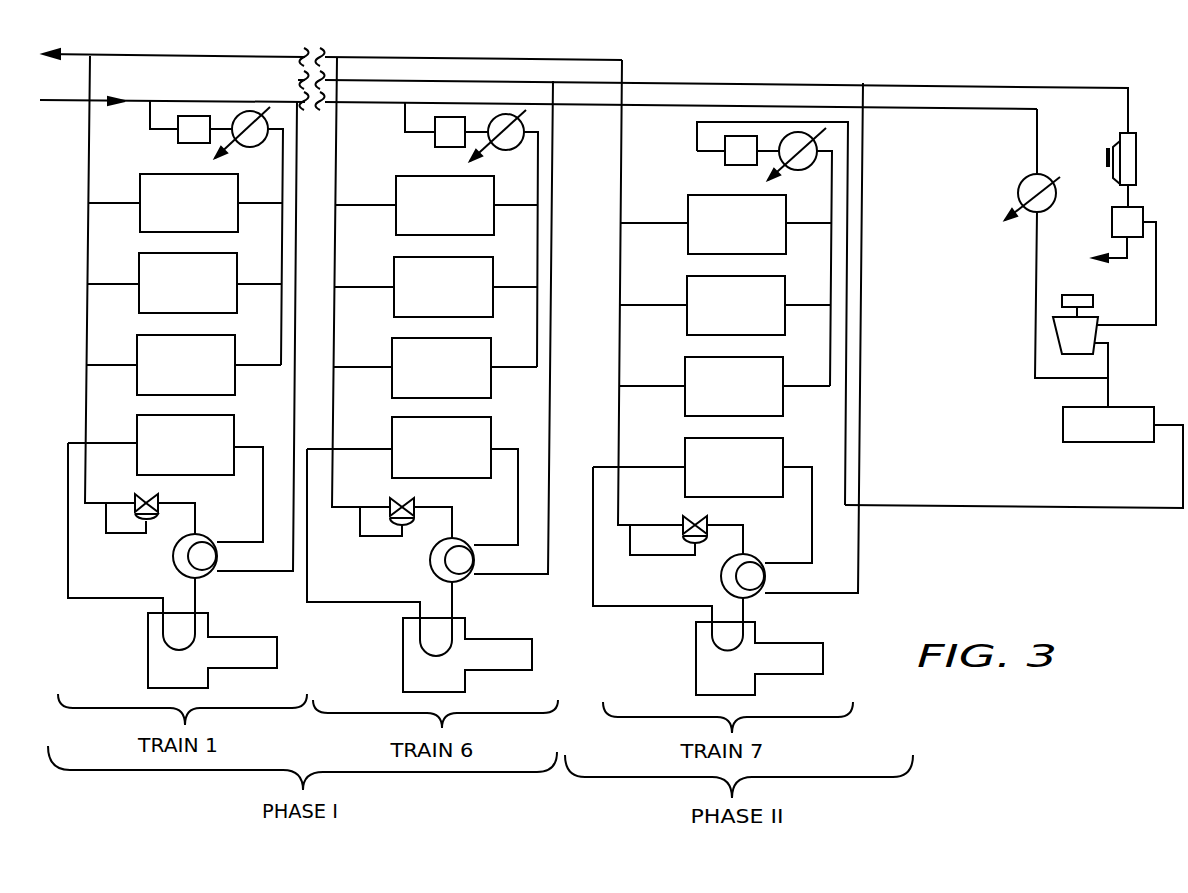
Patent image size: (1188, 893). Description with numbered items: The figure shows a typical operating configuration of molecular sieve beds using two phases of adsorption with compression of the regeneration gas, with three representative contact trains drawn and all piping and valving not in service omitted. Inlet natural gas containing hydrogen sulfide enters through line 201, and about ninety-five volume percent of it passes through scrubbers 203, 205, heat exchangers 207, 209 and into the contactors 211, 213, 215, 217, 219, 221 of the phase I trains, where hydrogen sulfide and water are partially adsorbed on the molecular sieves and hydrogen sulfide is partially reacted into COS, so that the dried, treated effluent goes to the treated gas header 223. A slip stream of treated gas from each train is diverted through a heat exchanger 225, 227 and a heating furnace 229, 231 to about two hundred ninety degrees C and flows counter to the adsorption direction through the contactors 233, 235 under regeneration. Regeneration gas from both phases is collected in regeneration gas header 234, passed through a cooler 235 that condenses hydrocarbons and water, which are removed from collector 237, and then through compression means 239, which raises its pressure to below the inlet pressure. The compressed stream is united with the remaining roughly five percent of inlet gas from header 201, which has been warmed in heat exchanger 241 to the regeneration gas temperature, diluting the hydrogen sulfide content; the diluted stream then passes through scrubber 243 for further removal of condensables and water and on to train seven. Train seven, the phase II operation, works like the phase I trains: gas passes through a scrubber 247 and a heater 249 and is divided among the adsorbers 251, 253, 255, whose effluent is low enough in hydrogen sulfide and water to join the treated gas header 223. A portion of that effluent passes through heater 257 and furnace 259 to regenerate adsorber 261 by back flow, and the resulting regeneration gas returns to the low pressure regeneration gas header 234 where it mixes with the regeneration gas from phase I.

The inlet line 201 is at (58, 101).
The treated gas header 223 is at (195, 58).
The regeneration gas header 234 is at (485, 79).
The scrubber 203 is at (178, 143).
The scrubber 205 is at (433, 146).
The scrubber 247 is at (725, 165).
The heat exchanger 207 is at (253, 145).
The heat exchanger 209 is at (508, 148).
The heater 249 is at (801, 168).
The heat exchanger 241 is at (1057, 188).
The contactor 211 is at (140, 176).
The contactor 213 is at (139, 255).
The contactor 215 is at (137, 337).
The contactor 233 is at (137, 418).
The contactor 217 is at (396, 178).
The contactor 219 is at (394, 258).
The contactor 221 is at (392, 340).
The contactor / cooler 235 is at (392, 418).
The adsorber 251 is at (688, 197).
The adsorber 253 is at (687, 278).
The adsorber 255 is at (685, 358).
The adsorber 261 is at (685, 439).
The heat exchanger 225 is at (173, 560).
The heat exchanger 227 is at (430, 562).
The heater 257 is at (721, 578).
The heating furnace 229 is at (243, 637).
The heating furnace 231 is at (494, 639).
The furnace 259 is at (782, 643).
The collector 237 is at (1112, 222).
The compression means 239 is at (1098, 318).
The scrubber 243 is at (1093, 442).